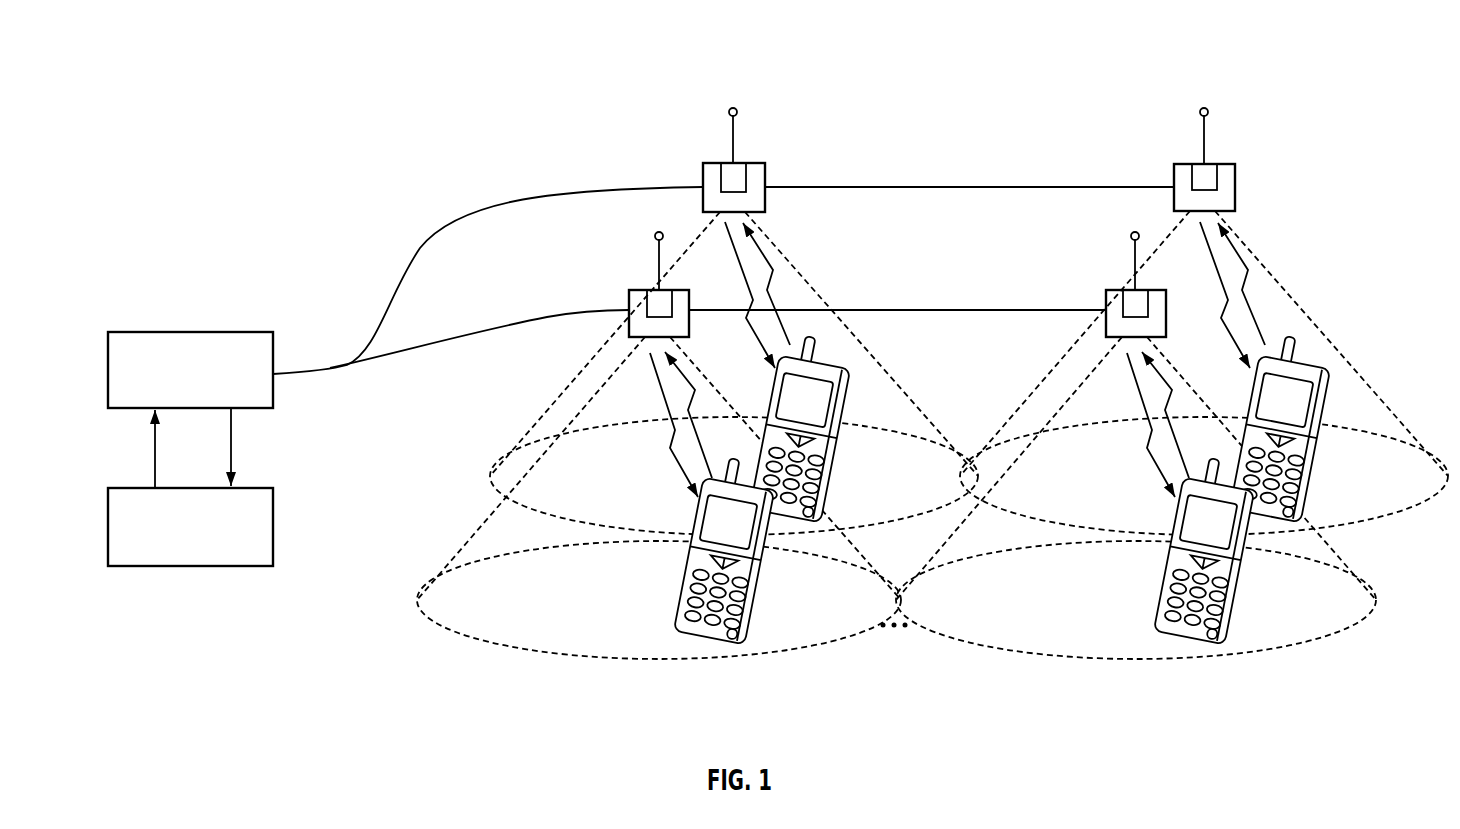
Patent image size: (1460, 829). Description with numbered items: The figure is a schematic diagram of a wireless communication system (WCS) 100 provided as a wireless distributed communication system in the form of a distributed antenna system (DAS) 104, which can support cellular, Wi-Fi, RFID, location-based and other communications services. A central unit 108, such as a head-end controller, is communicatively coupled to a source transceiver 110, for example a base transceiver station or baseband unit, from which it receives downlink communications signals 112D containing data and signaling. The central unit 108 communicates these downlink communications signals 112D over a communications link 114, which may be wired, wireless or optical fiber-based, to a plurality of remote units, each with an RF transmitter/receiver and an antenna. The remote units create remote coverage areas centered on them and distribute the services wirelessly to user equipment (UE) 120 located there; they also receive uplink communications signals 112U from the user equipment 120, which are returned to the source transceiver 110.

The wireless communication system (WCS) 100 is at (1022, 88).
The distributed antenna system (DAS) 104 is at (893, 131).
The central unit 108 is at (205, 388).
The source transceiver 110 is at (205, 543).
The downlink communications signals 112D is at (152, 456).
The uplink communications signals 112U is at (233, 459).
The communications link 114 is at (513, 203).
The user equipment (UE) 120 is at (847, 397).